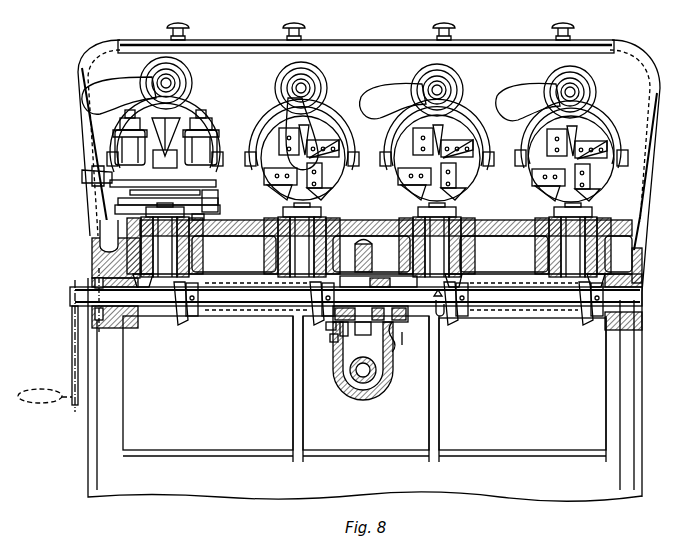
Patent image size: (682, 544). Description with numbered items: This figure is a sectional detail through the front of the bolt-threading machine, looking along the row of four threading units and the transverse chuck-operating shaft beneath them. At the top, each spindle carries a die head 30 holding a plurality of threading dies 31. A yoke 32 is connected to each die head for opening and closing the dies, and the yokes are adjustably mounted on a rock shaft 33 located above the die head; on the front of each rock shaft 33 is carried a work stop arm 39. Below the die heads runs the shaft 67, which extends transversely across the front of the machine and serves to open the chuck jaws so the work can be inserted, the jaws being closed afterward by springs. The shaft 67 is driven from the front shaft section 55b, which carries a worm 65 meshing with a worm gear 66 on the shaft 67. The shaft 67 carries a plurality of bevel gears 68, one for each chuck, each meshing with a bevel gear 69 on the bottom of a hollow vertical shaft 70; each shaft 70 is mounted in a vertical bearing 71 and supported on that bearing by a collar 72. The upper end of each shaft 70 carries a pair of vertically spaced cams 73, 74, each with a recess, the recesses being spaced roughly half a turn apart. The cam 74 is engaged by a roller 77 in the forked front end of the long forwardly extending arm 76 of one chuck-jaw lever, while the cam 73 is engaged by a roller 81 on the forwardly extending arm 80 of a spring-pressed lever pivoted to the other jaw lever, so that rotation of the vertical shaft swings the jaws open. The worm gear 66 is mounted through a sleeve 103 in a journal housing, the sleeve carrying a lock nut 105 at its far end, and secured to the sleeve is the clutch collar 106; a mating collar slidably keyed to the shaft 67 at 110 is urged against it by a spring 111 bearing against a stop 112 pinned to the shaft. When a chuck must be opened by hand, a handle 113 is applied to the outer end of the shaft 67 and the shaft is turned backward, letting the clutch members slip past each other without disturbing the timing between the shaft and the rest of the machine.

The die head 30 is at (341, 173).
The threading dies 31 is at (170, 150).
The yoke 32 is at (328, 100).
The rock shaft 33 is at (176, 84).
The work stop arm 39 is at (104, 92).
The front shaft section 55b is at (369, 372).
The worm 65 is at (362, 376).
The worm gear 66 is at (364, 240).
The shaft 67 is at (238, 309).
The bevel gears 68 is at (184, 322).
The bevel gear 69 is at (458, 281).
The hollow vertical shaft 70 is at (300, 254).
The vertical bearing 71 is at (470, 229).
The collar 72 is at (453, 211).
The cam 73 is at (216, 184).
The cam 74 is at (198, 222).
The forwardly extending arm 76 is at (215, 185).
The roller 77 is at (220, 201).
The forwardly extending arm 80 is at (86, 176).
The roller 81 is at (132, 192).
The sleeve 103 is at (352, 326).
The lock nut 105 is at (335, 326).
The clutch collar 106 is at (378, 280).
The key 110 is at (430, 322).
The spring 111 is at (398, 326).
The stop 112 is at (408, 332).
The handle 113 is at (72, 345).